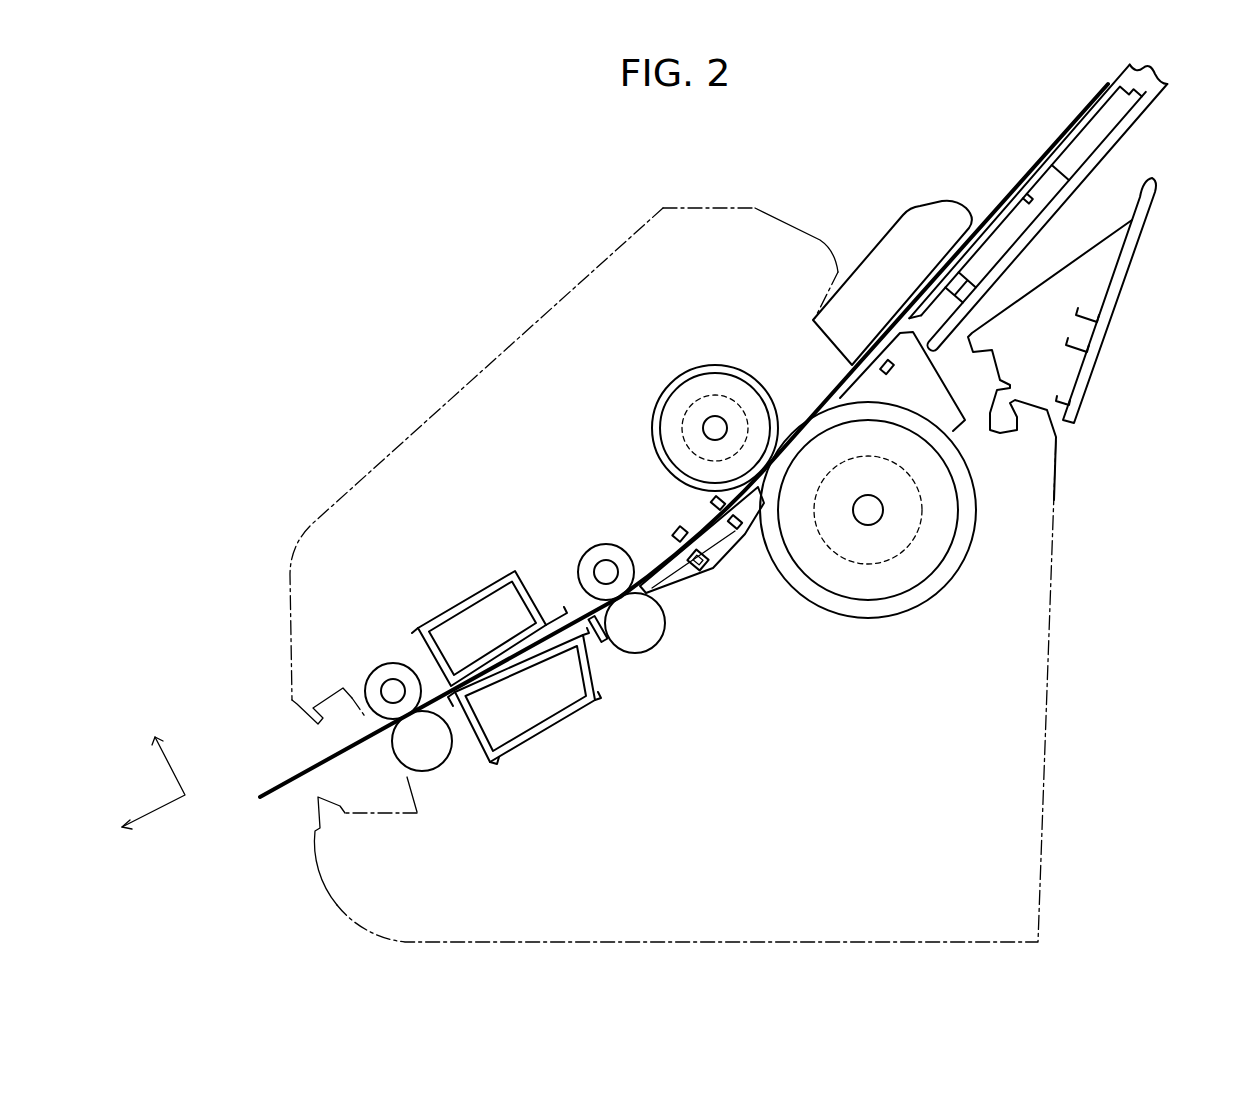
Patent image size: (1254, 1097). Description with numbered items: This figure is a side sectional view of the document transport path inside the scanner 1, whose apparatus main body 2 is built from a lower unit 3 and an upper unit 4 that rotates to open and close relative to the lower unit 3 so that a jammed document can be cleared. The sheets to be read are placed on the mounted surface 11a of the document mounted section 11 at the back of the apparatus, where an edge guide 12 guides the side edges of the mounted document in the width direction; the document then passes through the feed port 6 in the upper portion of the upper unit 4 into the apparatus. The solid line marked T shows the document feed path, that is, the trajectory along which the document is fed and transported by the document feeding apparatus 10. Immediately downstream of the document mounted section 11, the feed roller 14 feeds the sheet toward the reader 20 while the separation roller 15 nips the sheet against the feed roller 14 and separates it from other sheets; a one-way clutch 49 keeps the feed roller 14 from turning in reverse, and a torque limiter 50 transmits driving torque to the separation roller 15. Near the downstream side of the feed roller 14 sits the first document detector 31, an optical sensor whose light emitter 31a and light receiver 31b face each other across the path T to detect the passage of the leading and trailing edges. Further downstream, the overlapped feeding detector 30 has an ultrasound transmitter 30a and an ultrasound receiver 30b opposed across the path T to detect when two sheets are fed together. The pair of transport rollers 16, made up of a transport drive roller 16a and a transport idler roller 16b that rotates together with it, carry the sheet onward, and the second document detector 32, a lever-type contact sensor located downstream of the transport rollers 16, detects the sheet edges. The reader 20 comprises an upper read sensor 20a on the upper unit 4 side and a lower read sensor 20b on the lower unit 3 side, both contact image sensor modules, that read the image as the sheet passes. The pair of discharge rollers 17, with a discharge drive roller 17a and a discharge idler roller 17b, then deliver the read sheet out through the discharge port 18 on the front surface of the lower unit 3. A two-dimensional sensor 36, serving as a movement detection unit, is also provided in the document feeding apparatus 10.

The scanner 1 is at (444, 206).
The apparatus main body 2 is at (1070, 522).
The lower unit 3 is at (1050, 590).
The upper unit 4 is at (505, 350).
The feed port 6 is at (787, 360).
The document feeding apparatus 10 is at (820, 201).
The document mounted section 11 is at (1073, 208).
The mounted surface 11a is at (1022, 160).
The document feed path T is at (1070, 130).
The edge guide 12 is at (906, 210).
The feed roller 14 is at (886, 542).
The separation roller 15 is at (683, 379).
The pair of transport rollers 16 is at (654, 651).
The transport drive roller 16a is at (650, 628).
The transport idler roller 16b is at (610, 590).
The pair of discharge rollers 17 is at (434, 785).
The discharge drive roller 17a is at (427, 748).
The discharge idler roller 17b is at (385, 710).
The discharge port 18 is at (337, 735).
The reader 20 is at (506, 647).
The upper read sensor 20a is at (482, 618).
The lower read sensor 20b is at (531, 707).
The overlapped feeding detector 30 is at (657, 515).
The ultrasound transmitter 30a is at (668, 545).
The ultrasound receiver 30b is at (648, 511).
The first document detector 31 is at (743, 585).
The light emitter 31a is at (744, 532).
The light receiver 31b is at (722, 512).
The second document detector 32 is at (600, 642).
The two-dimensional sensor 36 is at (967, 287).
The one-way clutch 49 is at (875, 565).
The torque limiter 50 is at (690, 382).